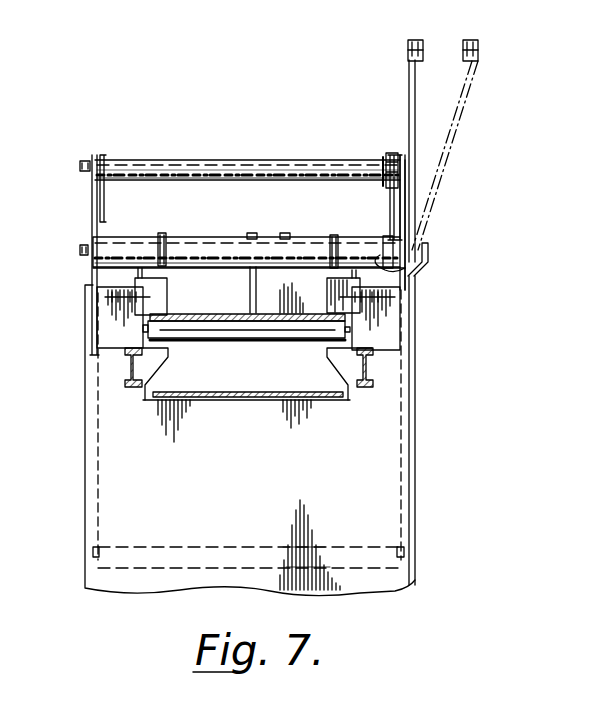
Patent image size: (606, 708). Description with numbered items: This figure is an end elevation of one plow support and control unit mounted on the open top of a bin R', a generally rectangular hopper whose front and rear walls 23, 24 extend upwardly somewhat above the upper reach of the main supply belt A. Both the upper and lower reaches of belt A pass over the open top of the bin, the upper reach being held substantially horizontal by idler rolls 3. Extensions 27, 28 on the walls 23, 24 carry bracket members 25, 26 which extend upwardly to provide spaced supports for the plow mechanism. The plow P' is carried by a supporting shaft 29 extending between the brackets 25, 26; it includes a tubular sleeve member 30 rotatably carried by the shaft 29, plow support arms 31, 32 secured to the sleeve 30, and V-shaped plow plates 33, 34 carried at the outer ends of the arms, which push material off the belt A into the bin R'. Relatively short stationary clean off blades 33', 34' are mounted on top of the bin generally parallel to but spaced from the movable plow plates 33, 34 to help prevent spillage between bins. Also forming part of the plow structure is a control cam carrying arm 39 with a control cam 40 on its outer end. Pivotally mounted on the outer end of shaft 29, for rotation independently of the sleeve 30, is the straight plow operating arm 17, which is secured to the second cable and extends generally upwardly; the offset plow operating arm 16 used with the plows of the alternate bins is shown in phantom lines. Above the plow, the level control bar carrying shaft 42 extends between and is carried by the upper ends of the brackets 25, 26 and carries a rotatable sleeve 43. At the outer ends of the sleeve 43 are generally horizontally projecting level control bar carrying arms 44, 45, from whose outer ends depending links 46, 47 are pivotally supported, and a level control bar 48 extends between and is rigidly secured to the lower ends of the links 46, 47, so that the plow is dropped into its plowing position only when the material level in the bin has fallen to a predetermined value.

The idler rolls 3 is at (243, 337).
The offset plow operating arm 16 is at (452, 92).
The straight plow operating arm 17 is at (409, 85).
The front wall 23 is at (85, 406).
The rear wall 24 is at (412, 388).
The bracket member 25 is at (92, 209).
The bracket member 26 is at (403, 207).
The extension 27 is at (85, 330).
The extension 28 is at (412, 322).
The supporting shaft 29 is at (82, 249).
The tubular sleeve member 30 is at (148, 240).
The plow support arm 31 is at (185, 260).
The plow support arm 32 is at (328, 245).
The V-shaped plow plate 33 is at (239, 247).
The V-shaped plow plate 34 is at (286, 247).
The stationary clean off blade 33' is at (171, 296).
The stationary clean off blade 34' is at (328, 291).
The control cam carrying arm 39 is at (390, 262).
The control cam 40 is at (388, 178).
The level control bar carrying shaft 42 is at (195, 160).
The rotatable sleeve 43 is at (287, 160).
The level control bar carrying arm 44 is at (105, 198).
The level control bar carrying arm 45 is at (388, 195).
The depending link 46 is at (102, 230).
The depending link 47 is at (392, 236).
The level control bar 48 is at (197, 547).
The main supply belt A is at (206, 311).
The plow P' is at (116, 271).
The bin R' is at (432, 435).